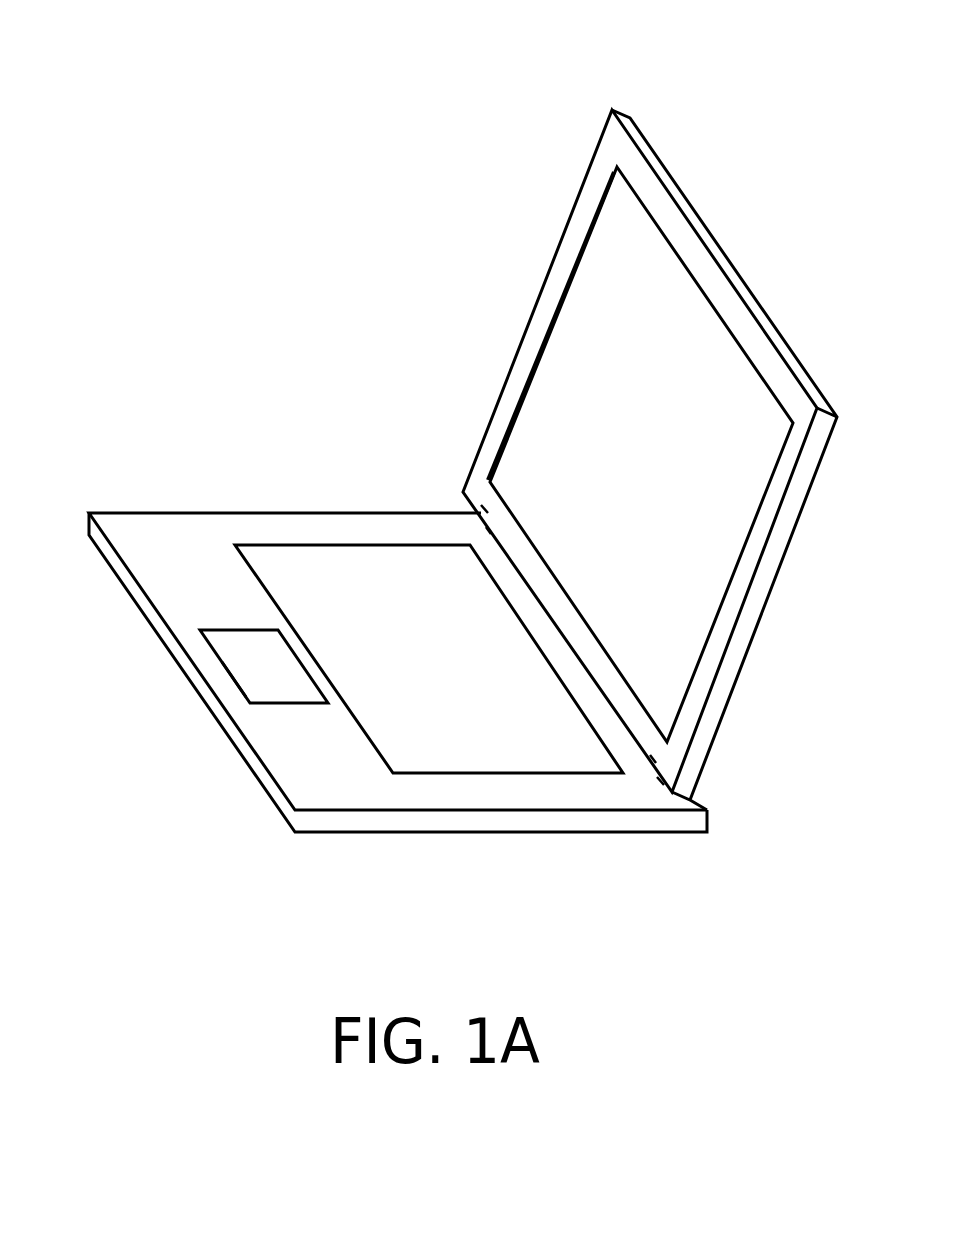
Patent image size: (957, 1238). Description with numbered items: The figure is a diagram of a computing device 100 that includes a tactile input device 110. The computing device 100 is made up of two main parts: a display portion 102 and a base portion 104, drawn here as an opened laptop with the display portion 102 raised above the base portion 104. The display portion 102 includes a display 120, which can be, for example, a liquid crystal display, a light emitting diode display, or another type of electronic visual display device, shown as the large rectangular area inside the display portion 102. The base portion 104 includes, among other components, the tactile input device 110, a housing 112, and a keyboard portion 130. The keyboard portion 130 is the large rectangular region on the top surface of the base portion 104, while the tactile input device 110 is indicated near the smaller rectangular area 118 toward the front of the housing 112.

The computing device 100 is at (424, 100).
The display portion 102 is at (554, 249).
The base portion 104 is at (185, 511).
The tactile input device 110 is at (237, 690).
The housing 112 is at (143, 557).
The touchpad 118 is at (237, 637).
The display 120 is at (755, 397).
The keyboard portion 130 is at (350, 567).